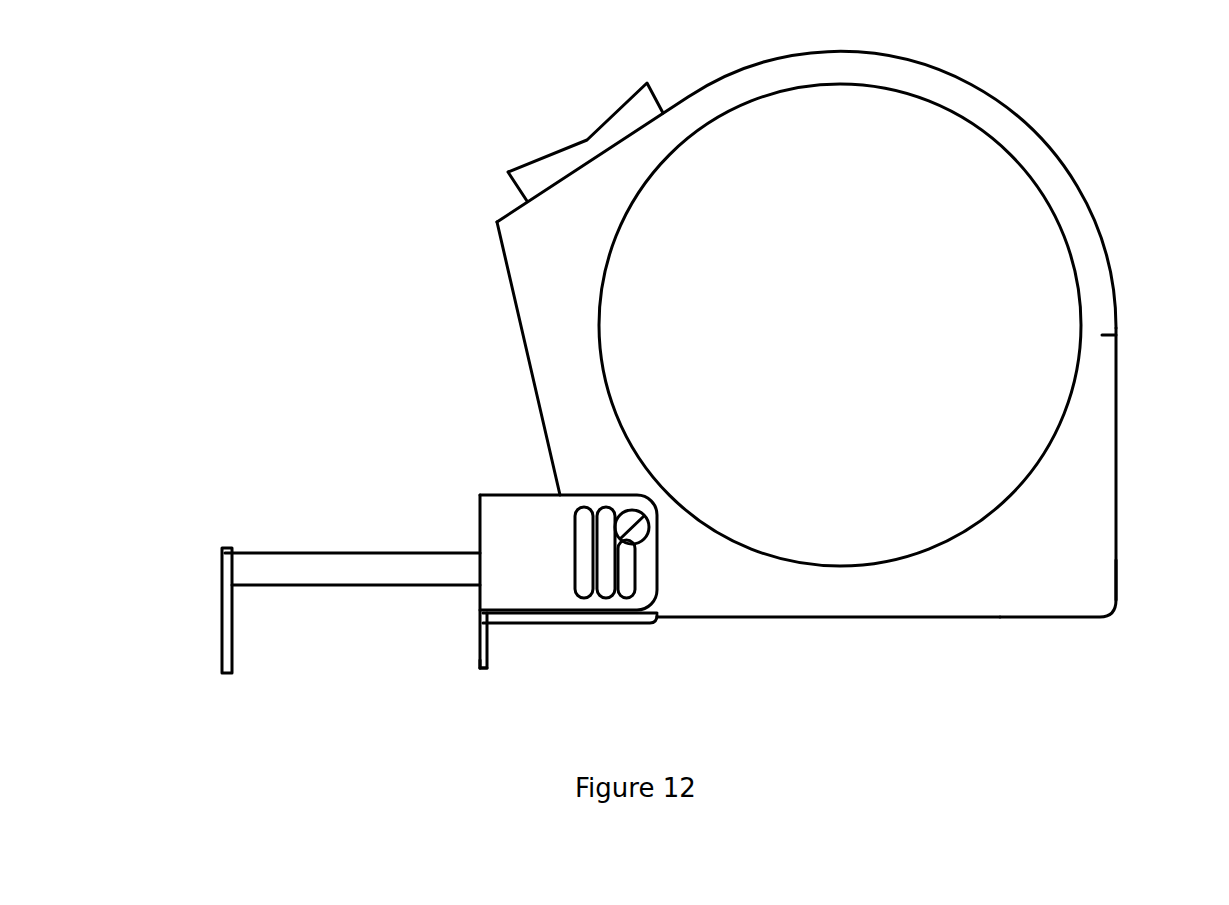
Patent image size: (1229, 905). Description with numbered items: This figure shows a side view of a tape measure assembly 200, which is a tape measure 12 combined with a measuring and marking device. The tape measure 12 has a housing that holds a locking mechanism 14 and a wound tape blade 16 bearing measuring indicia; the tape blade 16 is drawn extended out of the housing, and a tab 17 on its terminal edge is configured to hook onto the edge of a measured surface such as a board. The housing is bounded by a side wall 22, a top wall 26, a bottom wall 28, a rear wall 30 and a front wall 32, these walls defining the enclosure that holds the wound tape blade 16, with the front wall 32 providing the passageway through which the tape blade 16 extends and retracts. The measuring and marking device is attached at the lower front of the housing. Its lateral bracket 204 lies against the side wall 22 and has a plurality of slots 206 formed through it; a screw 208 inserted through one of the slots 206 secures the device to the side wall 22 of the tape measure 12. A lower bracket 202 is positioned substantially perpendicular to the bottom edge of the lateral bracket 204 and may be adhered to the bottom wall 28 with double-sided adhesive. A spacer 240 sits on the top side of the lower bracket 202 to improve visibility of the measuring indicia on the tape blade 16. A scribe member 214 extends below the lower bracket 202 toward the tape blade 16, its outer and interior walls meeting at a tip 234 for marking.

The tape measure 12 is at (785, 342).
The locking mechanism 14 is at (612, 108).
The tape blade 16 is at (389, 552).
The tab 17 is at (220, 615).
The side wall 22 is at (1080, 562).
The top wall 26 is at (718, 77).
The bottom wall 28 is at (925, 617).
The rear wall 30 is at (1116, 405).
The front wall 32 is at (523, 348).
The tape measure assembly 200 is at (674, 370).
The lower bracket 202 is at (593, 623).
The lateral bracket 204 is at (547, 577).
The slots 206 is at (603, 563).
The screw 208 is at (638, 545).
The scribe member 214 is at (445, 651).
The tip 234 is at (480, 668).
The spacer 240 is at (592, 623).